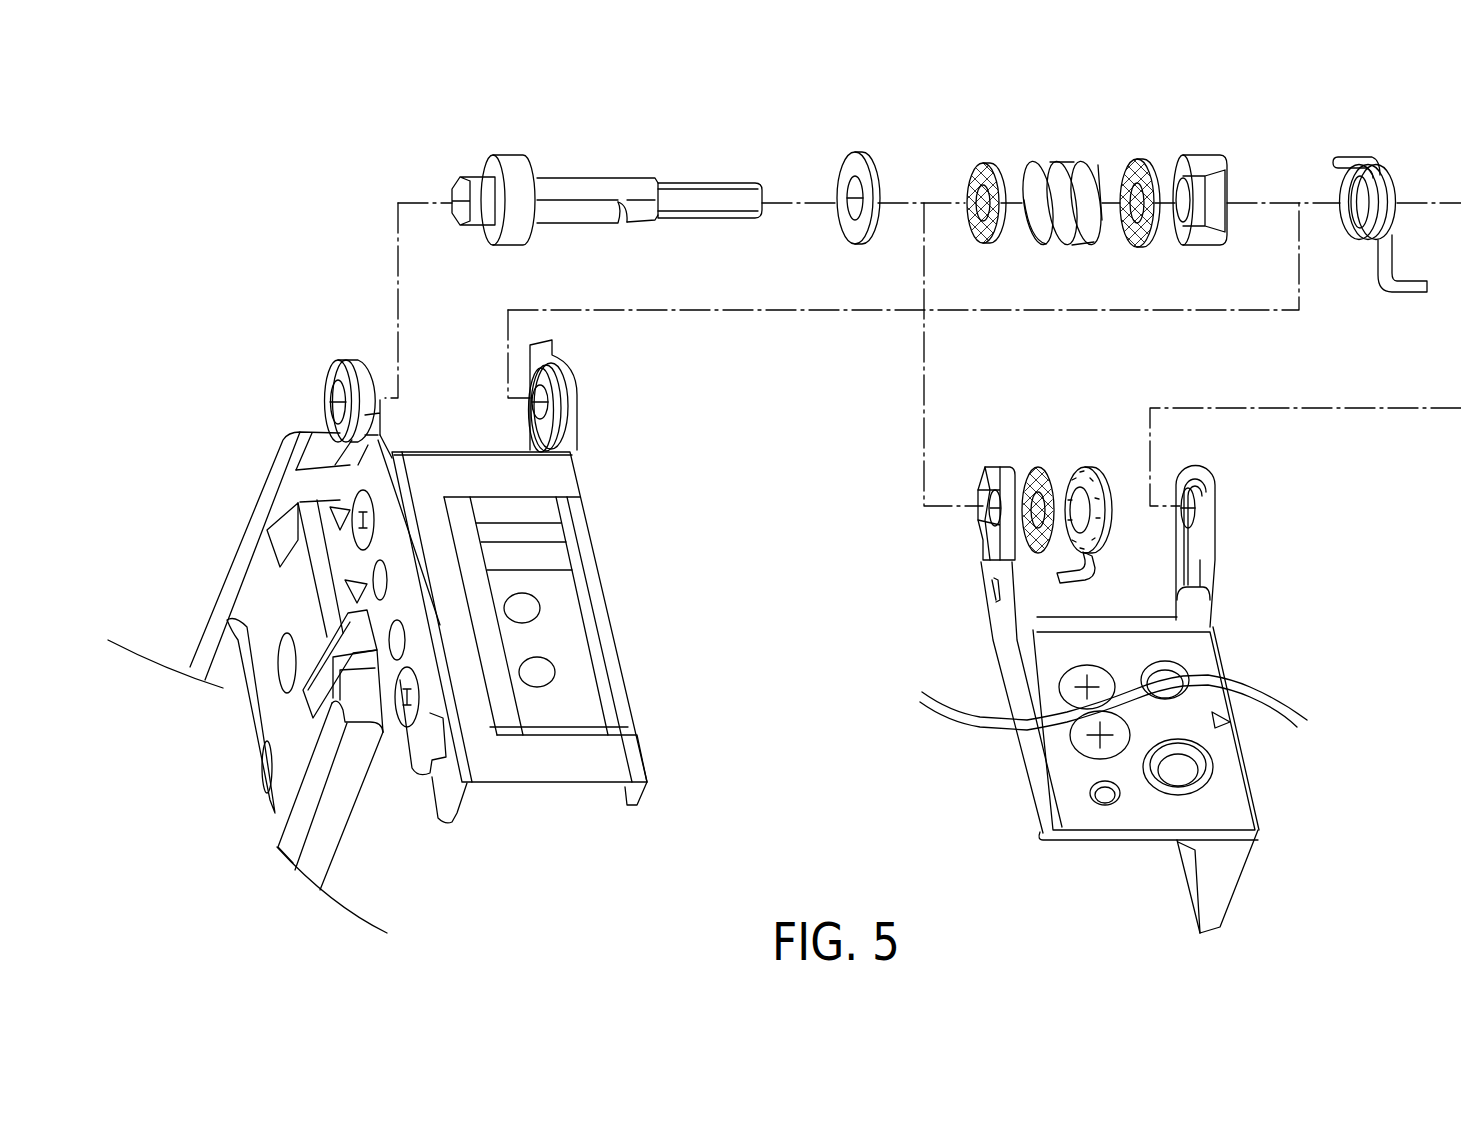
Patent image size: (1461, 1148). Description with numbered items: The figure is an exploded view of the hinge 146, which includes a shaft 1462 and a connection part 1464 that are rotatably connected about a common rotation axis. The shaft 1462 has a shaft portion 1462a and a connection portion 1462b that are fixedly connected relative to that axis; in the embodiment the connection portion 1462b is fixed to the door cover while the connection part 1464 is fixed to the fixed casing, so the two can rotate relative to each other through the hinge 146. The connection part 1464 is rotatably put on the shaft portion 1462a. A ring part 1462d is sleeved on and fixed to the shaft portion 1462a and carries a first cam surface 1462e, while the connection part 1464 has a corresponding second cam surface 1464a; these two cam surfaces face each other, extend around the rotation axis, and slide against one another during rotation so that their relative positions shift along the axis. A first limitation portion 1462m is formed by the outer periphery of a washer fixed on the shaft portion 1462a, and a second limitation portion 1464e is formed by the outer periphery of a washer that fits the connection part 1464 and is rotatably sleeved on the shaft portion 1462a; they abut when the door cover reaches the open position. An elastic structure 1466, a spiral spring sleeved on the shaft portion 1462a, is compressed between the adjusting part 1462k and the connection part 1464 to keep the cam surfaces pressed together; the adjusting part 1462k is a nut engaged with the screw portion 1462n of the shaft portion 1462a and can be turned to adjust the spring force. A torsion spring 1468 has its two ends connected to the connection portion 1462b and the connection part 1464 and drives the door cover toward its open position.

The hinge 146 is at (280, 170).
The shaft 1462 is at (1242, 90).
The shaft portion 1462a is at (587, 183).
The screw portion 1462n is at (712, 198).
The ring part 1462d is at (860, 158).
The first cam surface 1462e is at (878, 178).
The first limitation portion 1462m is at (995, 188).
The adjusting part 1462k is at (1200, 160).
The connection portion 1462b is at (622, 475).
The elastic structure 1466 is at (1060, 228).
The torsion spring 1468 is at (1395, 183).
The connection part 1464 is at (1282, 550).
The second cam surface 1464a is at (983, 520).
The second limitation portion 1464e is at (1093, 470).